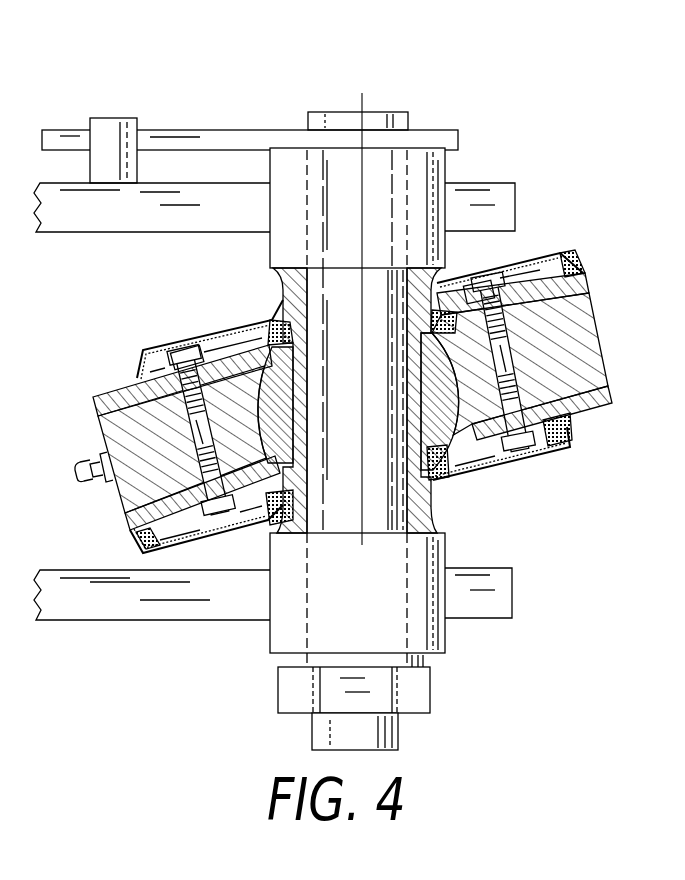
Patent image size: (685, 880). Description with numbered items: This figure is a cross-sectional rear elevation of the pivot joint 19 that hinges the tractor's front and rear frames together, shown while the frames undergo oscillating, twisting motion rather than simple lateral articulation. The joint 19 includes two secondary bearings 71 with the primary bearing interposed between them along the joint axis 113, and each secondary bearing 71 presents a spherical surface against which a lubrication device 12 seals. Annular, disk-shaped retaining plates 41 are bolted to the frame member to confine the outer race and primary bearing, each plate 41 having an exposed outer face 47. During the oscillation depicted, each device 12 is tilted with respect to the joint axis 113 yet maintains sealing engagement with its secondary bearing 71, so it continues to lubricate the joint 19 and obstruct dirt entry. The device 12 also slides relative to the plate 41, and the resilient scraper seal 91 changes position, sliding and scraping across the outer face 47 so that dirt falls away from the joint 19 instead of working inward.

The pivot joint 19 is at (503, 130).
The joint axis 113 is at (362, 93).
The secondary bearing 71 is at (283, 300).
The retaining plate 41 is at (95, 397).
The outer face 47 is at (117, 388).
The lubrication device 12 is at (521, 255).
The scraper seal 91 is at (574, 270).